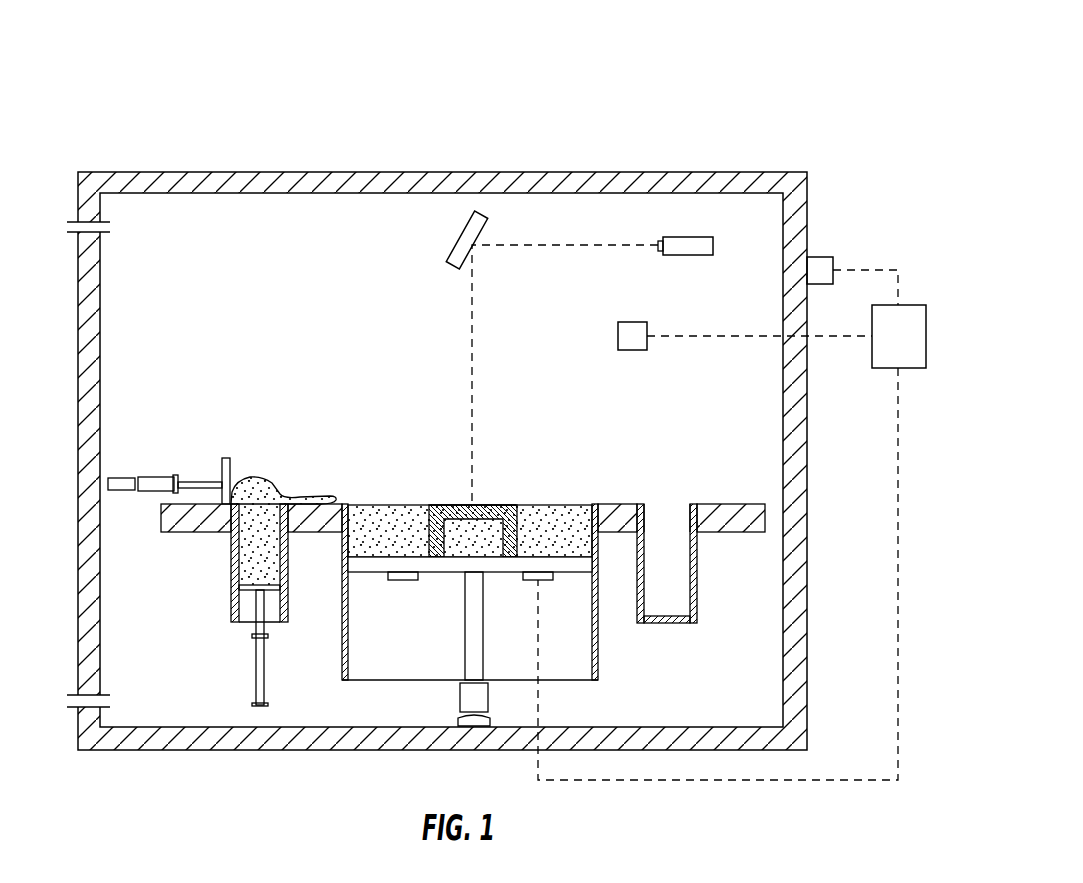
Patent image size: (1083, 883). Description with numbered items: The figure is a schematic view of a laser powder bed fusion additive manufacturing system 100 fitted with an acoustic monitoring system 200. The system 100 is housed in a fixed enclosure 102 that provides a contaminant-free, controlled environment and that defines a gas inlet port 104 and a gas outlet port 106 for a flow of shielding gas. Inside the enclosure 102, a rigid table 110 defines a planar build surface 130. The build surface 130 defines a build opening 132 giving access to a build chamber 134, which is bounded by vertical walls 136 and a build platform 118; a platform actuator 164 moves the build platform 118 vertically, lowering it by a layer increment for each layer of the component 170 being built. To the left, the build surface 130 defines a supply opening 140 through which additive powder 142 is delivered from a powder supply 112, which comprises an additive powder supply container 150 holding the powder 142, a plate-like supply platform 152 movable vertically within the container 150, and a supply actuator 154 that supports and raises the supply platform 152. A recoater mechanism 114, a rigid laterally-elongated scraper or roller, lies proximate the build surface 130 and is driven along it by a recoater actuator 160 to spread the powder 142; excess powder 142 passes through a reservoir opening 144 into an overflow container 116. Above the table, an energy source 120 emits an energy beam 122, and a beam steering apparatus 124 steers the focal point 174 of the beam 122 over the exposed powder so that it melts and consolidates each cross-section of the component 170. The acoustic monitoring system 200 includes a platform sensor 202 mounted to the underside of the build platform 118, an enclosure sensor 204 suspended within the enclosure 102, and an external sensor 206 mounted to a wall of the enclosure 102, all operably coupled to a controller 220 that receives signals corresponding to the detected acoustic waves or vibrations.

The DMLS or DMLM system 100 is at (60, 269).
The enclosure 102 is at (265, 195).
The gas inlet port 104 is at (110, 229).
The gas outlet port 106 is at (110, 701).
The table 110 is at (713, 532).
The powder supply 112 is at (245, 605).
The recoater mechanism 114 is at (227, 458).
The overflow container 116 is at (650, 547).
The build platform 118 is at (363, 572).
The energy source 120 is at (698, 237).
The energy beam 122 is at (470, 370).
The beam steering apparatus 124 is at (455, 232).
The planar build surface 130 is at (715, 496).
The build opening 132 is at (588, 520).
The build chamber 134 is at (606, 645).
The vertical walls 136 is at (476, 587).
The supply opening 140 is at (278, 496).
The additive powder 142 is at (379, 505).
The reservoir opening 144 is at (689, 520).
The additive powder supply container 150 is at (290, 561).
The supply platform 152 is at (272, 590).
The supply actuator 154 is at (256, 672).
The recoater actuator 160 is at (158, 478).
The platform actuator 164 is at (460, 703).
The component 170 is at (435, 540).
The focal point 174 is at (470, 504).
The acoustic monitoring system 200 is at (825, 97).
The platform sensor 202 is at (405, 582).
The enclosure sensor 204 is at (633, 322).
The external sensor 206 is at (835, 270).
The controller 220 is at (915, 351).